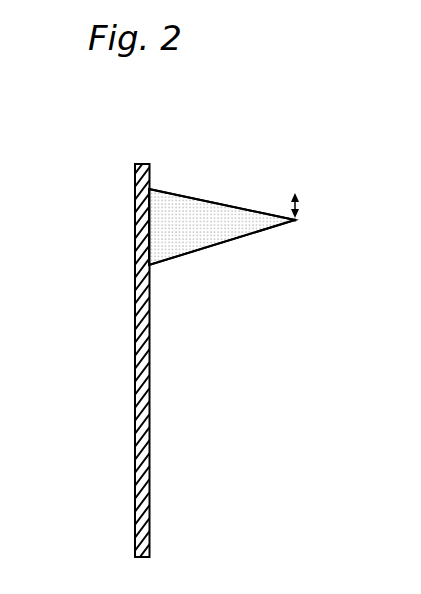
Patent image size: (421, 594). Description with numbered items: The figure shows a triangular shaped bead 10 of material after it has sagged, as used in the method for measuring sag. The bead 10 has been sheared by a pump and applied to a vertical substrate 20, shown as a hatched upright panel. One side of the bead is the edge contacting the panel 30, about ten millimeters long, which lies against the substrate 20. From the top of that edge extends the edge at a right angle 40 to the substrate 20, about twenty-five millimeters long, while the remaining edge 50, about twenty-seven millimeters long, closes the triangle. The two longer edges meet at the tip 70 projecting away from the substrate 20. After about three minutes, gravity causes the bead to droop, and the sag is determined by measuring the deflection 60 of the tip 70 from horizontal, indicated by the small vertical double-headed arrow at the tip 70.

The triangular shaped bead 10 is at (246, 185).
The vertical substrate 20 is at (143, 332).
The edge contacting the panel 30 is at (148, 208).
The edge at a right angle to the substrate 40 is at (210, 202).
The remaining edge 50 is at (237, 238).
The deflection 60 is at (300, 204).
The tip 70 is at (298, 222).